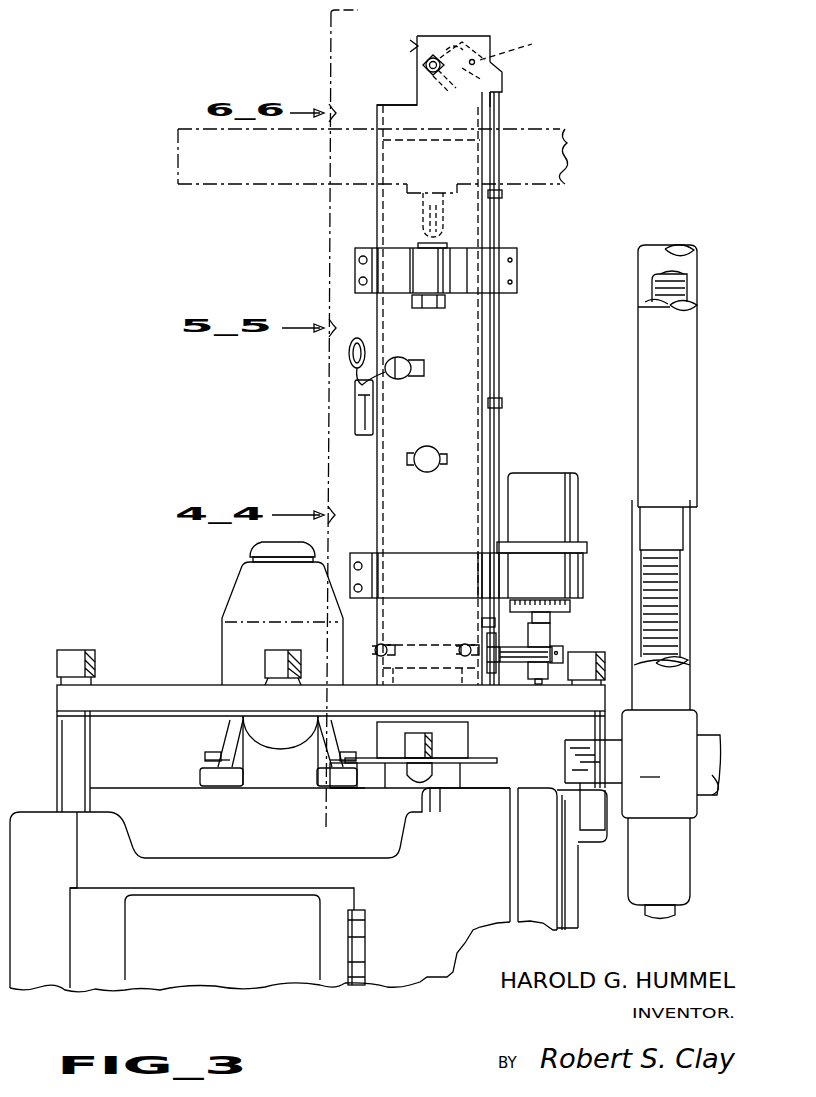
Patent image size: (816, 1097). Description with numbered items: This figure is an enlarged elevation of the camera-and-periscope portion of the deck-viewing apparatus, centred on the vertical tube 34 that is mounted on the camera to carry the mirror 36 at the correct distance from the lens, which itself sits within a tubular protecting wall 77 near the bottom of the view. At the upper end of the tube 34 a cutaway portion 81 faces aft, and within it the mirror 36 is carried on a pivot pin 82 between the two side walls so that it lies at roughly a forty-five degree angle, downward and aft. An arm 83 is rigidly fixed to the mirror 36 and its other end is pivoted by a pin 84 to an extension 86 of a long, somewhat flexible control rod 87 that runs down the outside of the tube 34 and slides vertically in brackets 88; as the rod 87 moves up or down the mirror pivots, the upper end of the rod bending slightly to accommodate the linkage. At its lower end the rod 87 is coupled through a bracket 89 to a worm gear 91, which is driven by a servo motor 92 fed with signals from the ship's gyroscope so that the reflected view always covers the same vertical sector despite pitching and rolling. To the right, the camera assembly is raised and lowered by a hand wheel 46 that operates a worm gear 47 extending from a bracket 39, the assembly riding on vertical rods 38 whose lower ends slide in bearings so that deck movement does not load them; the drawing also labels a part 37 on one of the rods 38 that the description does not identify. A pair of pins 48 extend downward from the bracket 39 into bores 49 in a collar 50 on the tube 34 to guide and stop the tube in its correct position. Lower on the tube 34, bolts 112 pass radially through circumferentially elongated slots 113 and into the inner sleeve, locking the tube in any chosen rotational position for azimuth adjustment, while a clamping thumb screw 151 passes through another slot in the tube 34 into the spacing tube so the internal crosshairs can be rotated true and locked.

The tube 34 is at (474, 340).
The mirror 36 is at (412, 46).
The crosshead block 37 is at (631, 770).
The rods 38 is at (697, 268).
The bracket 39 is at (555, 150).
The hand wheel 46 is at (712, 748).
The worm gear 47 is at (685, 410).
The pins 48 is at (427, 213).
The bores 49 is at (432, 306).
The collar 50 is at (400, 278).
The tubular protecting wall 77 is at (462, 738).
The cutaway portion 81 is at (412, 68).
The pivot pin 82 is at (433, 58).
The arm 83 is at (458, 44).
The pin 84 is at (519, 46).
The extension 86 is at (505, 85).
The control rod 87 is at (500, 120).
The brackets 88 is at (503, 196).
The bracket 89 is at (494, 670).
The worm gear 91 is at (565, 627).
The servo motor 92 is at (560, 480).
The bolts 112 is at (460, 645).
The slots 113 is at (452, 662).
The clamping thumb screw 151 is at (440, 455).